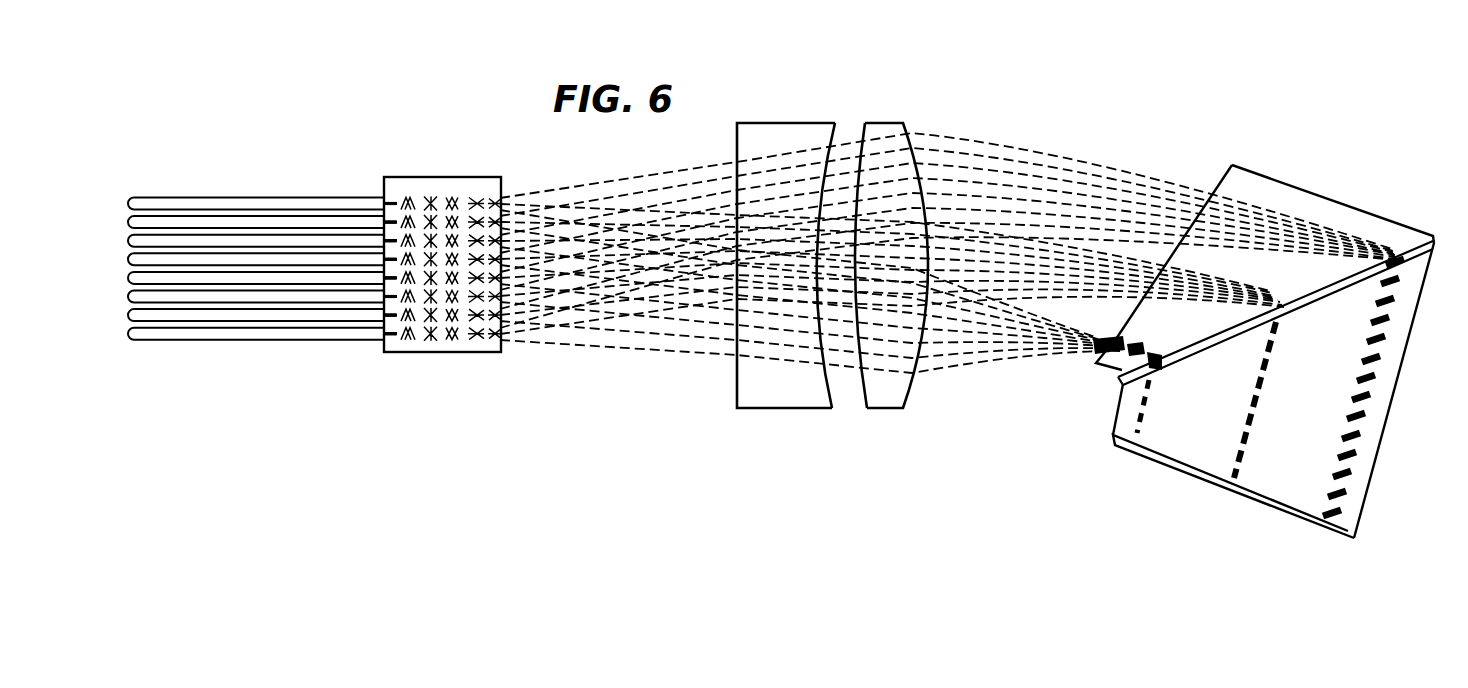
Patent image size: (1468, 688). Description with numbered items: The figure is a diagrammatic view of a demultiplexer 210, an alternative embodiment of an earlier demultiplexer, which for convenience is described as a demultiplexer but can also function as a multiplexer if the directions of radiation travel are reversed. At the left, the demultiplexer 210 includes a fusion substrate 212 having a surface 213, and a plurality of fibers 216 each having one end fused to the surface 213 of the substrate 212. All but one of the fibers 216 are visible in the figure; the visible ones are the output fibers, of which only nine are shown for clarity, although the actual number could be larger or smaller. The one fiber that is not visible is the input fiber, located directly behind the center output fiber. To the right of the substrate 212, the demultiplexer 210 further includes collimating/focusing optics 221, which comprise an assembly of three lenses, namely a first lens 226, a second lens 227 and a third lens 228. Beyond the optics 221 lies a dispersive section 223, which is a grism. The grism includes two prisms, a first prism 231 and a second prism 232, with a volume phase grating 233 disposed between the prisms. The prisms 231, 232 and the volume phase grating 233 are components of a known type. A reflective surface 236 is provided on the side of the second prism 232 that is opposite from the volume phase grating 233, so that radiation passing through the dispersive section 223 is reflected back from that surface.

The demultiplexer 210 is at (596, 443).
The fibers 216 is at (238, 174).
The surface 213 is at (383, 186).
The fusion substrate 212 is at (447, 177).
The collimating/focusing optics 221 is at (834, 102).
The lens 226 is at (775, 400).
The lens 227 is at (850, 400).
The lens 228 is at (885, 400).
The dispersive section 223 is at (1346, 180).
The prism 231 is at (1384, 228).
The prism 232 is at (1387, 387).
The volume phase grating 233 is at (1187, 347).
The reflective surface 236 is at (1270, 502).